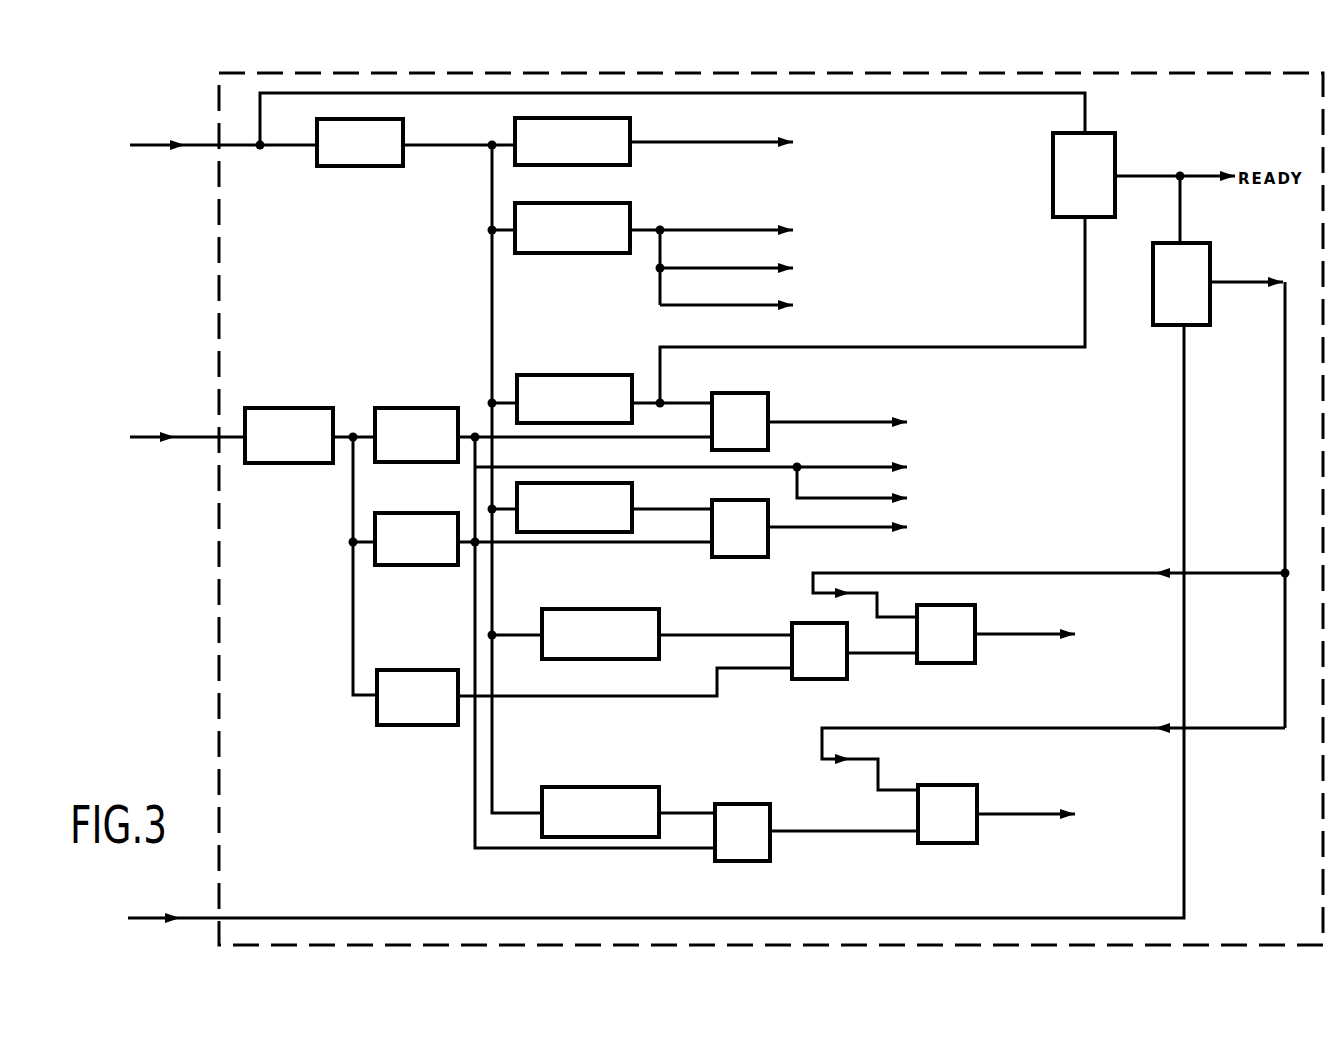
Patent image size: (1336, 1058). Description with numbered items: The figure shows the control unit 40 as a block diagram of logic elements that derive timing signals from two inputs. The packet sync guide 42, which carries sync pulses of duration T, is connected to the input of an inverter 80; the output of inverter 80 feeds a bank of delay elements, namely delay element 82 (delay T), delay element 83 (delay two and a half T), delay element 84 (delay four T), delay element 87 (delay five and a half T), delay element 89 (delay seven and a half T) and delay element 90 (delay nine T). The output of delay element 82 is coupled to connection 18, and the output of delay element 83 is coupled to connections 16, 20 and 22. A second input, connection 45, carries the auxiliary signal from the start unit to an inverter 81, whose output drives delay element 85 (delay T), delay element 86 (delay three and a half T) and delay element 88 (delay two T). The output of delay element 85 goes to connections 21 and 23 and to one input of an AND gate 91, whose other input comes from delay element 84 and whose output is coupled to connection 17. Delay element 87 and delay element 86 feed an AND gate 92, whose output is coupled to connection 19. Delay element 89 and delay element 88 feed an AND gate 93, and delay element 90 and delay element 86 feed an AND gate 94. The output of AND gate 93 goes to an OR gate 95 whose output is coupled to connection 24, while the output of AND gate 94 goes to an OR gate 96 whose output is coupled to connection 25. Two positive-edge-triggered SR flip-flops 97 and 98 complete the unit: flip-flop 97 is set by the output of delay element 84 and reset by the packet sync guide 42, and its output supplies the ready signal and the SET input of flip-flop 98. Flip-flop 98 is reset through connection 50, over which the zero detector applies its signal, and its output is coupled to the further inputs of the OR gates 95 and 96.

The control unit 40 is at (216, 675).
The packet sync guide 42 is at (200, 148).
The connection 45 is at (193, 440).
The connection 50 is at (196, 915).
The inverter 80 is at (375, 168).
The inverter 81 is at (288, 406).
The delay element 82 is at (578, 167).
The delay element 83 is at (578, 255).
The delay element 84 is at (578, 370).
The delay element 85 is at (414, 406).
The delay element 86 is at (418, 567).
The delay element 87 is at (642, 482).
The delay element 88 is at (416, 727).
The delay element 89 is at (606, 661).
The delay element 90 is at (609, 783).
The AND gate 91 is at (756, 388).
The AND gate 92 is at (752, 559).
The AND gate 93 is at (832, 681).
The AND gate 94 is at (755, 803).
The OR gate 95 is at (955, 665).
The OR gate 96 is at (961, 780).
The SR flip-flop 97 is at (1053, 181).
The SR flip-flop 98 is at (1153, 272).
The connection 16 is at (741, 270).
The connection 17 is at (853, 422).
The connection 18 is at (726, 142).
The connection 19 is at (853, 529).
The connection 20 is at (741, 230).
The connection 21 is at (706, 465).
The connection 22 is at (741, 307).
The connection 23 is at (867, 488).
The connection 24 is at (1039, 639).
The connection 25 is at (1040, 815).